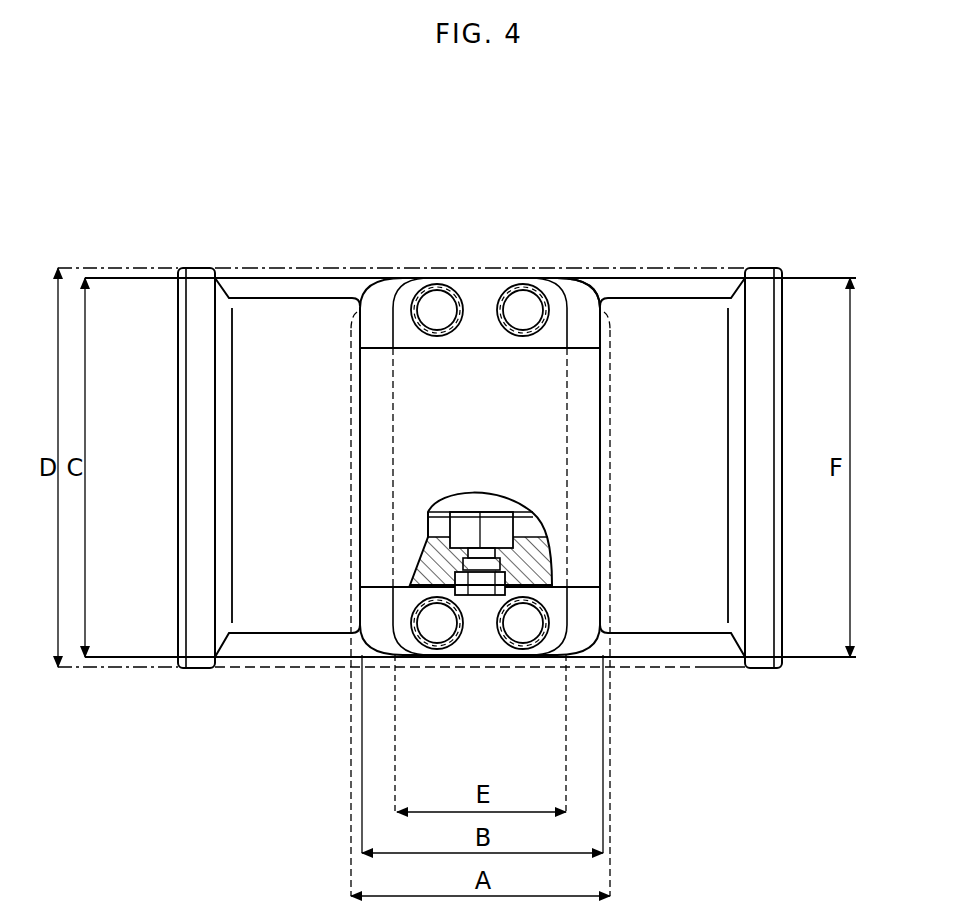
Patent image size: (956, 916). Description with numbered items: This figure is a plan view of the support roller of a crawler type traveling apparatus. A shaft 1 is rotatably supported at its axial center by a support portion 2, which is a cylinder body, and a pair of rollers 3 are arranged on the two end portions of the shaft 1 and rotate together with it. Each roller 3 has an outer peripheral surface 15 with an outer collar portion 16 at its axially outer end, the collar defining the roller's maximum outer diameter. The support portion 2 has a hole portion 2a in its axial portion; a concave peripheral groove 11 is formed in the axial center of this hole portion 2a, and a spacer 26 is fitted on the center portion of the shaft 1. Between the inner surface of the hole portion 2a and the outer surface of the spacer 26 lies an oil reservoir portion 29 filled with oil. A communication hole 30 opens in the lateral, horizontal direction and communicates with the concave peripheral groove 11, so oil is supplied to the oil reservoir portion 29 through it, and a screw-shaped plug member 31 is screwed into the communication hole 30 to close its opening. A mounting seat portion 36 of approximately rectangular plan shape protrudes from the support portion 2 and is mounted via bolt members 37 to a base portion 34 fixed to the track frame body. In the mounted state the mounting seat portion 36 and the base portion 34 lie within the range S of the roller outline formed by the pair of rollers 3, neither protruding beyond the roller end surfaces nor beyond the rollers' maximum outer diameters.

The shaft 1 is at (432, 503).
The support portion 2 is at (590, 400).
The hole portion 2a is at (532, 513).
The roller 3 is at (275, 636).
The concave peripheral groove 11 is at (500, 540).
The outer peripheral surface 15 is at (289, 312).
The outer collar portion 16 is at (197, 350).
The spacer 26 is at (428, 512).
The oil reservoir portion 29 is at (458, 514).
The communication hole 30 is at (462, 527).
The plug member 31 is at (482, 588).
The base portion 34 is at (577, 302).
The mounting seat portion 36 is at (483, 297).
The bolt member 37 is at (432, 300).
The range of the roller outer shape S is at (700, 670).